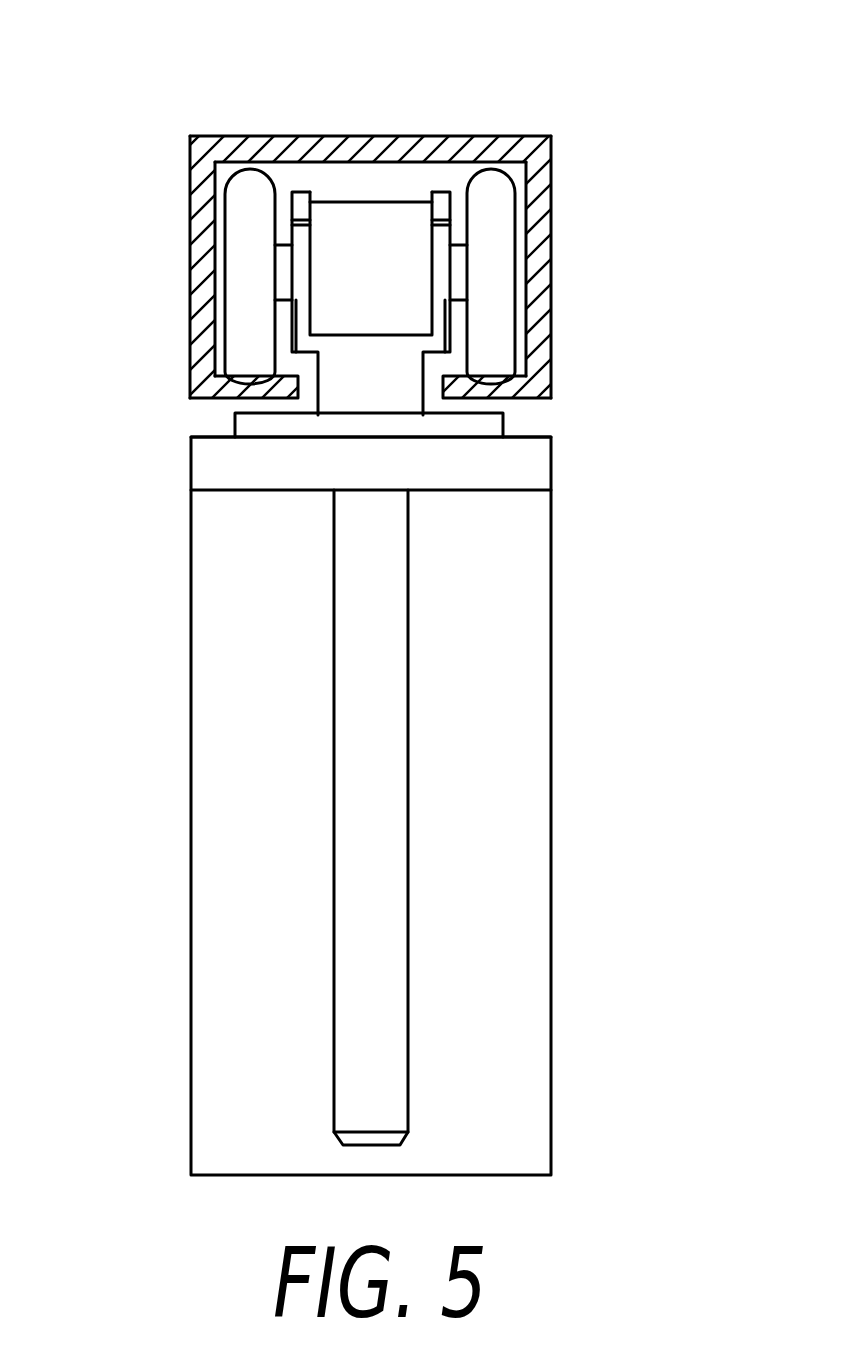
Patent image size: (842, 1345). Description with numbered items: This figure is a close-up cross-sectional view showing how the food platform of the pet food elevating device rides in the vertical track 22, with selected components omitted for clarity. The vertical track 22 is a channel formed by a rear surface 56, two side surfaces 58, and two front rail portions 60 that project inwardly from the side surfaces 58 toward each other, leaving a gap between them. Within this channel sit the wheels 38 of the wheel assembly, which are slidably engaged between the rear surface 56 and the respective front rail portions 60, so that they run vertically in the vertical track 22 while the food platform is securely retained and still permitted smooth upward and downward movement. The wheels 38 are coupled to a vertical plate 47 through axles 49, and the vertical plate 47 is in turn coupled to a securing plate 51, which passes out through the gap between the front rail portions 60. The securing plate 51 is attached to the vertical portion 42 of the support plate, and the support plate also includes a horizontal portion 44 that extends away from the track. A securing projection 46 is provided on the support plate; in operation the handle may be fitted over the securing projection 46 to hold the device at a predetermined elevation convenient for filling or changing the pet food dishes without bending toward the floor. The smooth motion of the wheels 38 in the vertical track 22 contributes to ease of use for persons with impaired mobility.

The vertical track 22 is at (272, 136).
The rear surface 56 is at (343, 136).
The side surfaces 58 is at (190, 215).
The front rail portions 60 is at (217, 398).
The wheels 38 is at (493, 213).
The vertical plate 47 is at (398, 233).
The axles 49 is at (455, 272).
The securing plate 51 is at (463, 430).
The vertical portion 42 is at (215, 463).
The horizontal portion 44 is at (512, 780).
The securing projection 46 is at (375, 683).